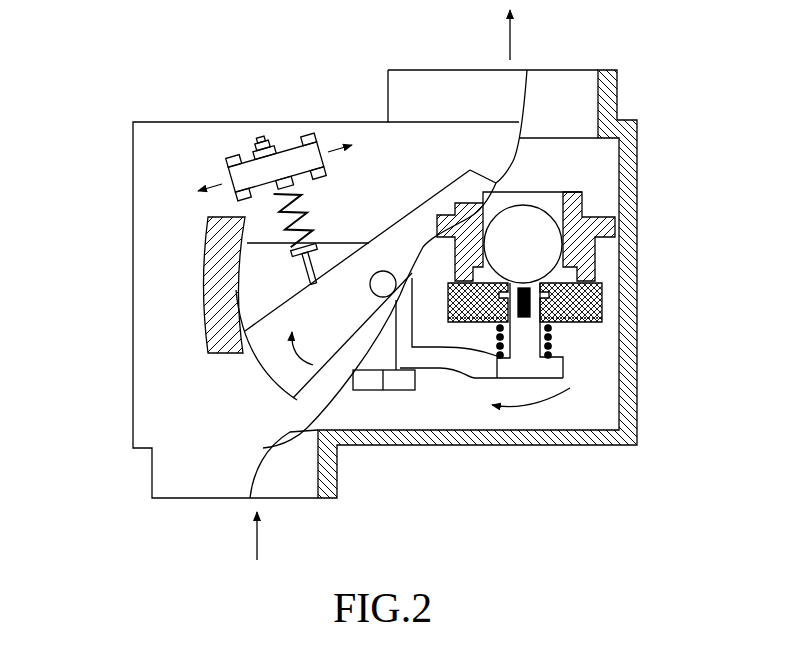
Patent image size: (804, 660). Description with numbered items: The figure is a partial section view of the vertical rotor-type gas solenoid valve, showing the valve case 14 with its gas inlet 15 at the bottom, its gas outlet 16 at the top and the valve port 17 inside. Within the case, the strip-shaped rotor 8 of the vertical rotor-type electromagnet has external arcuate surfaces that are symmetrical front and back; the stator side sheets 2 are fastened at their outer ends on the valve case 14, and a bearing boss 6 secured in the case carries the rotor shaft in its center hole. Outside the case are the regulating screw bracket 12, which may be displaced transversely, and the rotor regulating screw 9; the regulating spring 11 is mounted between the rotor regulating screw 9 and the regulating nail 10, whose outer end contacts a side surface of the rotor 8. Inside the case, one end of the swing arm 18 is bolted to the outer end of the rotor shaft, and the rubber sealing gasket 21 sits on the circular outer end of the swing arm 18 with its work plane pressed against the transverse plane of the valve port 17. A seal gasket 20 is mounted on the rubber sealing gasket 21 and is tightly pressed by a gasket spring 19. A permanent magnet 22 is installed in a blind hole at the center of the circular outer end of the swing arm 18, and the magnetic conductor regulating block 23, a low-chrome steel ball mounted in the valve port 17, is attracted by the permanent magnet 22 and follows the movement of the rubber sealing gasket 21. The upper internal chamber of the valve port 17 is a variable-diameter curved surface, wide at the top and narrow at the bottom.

The stator side sheet 2 is at (220, 285).
The bearing boss 6 is at (265, 285).
The rotor 8 is at (290, 373).
The rotor regulating screw 9 is at (260, 147).
The regulating nail 10 is at (310, 269).
The regulating spring 11 is at (282, 220).
The regulating screw bracket 12 is at (235, 182).
The valve case 14 is at (562, 432).
The gas inlet 15 is at (287, 483).
The gas outlet 16 is at (573, 82).
The valve port 17 is at (583, 268).
The swing arm 18 is at (525, 366).
The gasket spring 19 is at (550, 342).
The seal gasket 20 is at (597, 322).
The rubber sealing gasket 21 is at (583, 308).
The permanent magnet 22 is at (600, 287).
The magnetic conductor regulating block 23 is at (523, 245).